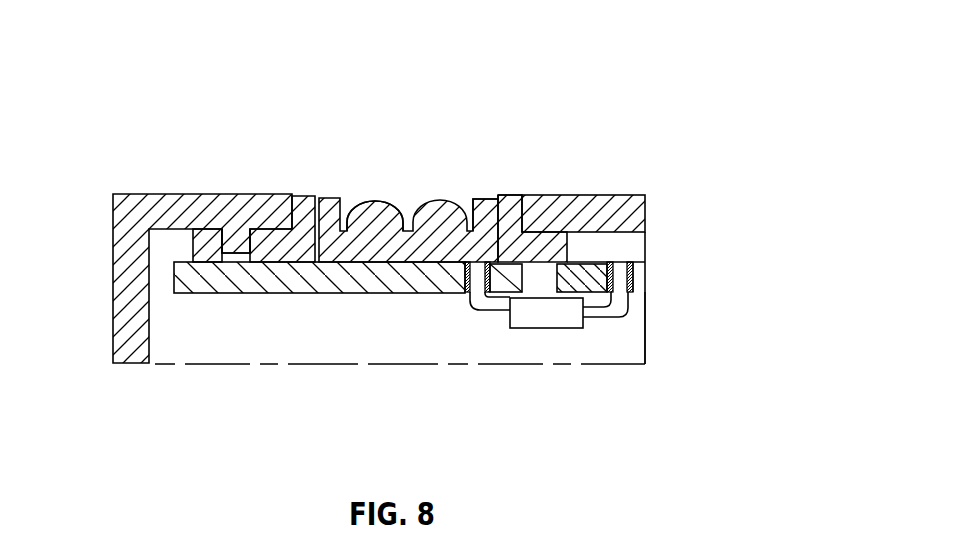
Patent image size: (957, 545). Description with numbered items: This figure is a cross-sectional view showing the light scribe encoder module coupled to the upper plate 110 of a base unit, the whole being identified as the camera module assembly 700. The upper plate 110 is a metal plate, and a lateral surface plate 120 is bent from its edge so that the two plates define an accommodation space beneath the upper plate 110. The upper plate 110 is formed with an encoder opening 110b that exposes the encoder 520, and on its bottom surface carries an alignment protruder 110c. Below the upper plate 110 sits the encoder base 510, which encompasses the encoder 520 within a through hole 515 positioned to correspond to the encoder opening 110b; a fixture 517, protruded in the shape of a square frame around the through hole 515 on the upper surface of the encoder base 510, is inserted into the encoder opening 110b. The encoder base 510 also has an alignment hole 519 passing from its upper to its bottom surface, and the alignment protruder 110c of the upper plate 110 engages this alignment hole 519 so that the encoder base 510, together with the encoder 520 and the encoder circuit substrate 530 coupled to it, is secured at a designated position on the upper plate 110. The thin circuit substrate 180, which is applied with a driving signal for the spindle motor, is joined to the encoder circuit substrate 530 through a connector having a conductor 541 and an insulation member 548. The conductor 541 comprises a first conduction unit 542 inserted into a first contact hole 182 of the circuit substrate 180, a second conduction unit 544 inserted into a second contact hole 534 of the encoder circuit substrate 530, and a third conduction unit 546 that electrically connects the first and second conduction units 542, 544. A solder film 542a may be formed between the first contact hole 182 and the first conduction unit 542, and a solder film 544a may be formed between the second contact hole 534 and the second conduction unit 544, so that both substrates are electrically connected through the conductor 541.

The camera module assembly 700 is at (538, 96).
The lateral surface plate 120 is at (118, 287).
The alignment hole 519 is at (230, 256).
The alignment protruder 110c is at (243, 258).
The encoder circuit substrate 530 is at (345, 303).
The encoder 520 is at (435, 198).
The through hole 515 is at (408, 204).
The fixture 517 is at (499, 198).
The encoder base 510 is at (570, 247).
The encoder opening 110b is at (518, 197).
The upper plate 110 is at (611, 196).
The second contact hole 534 is at (471, 268).
The solder film 544a is at (468, 292).
The second conduction unit 544 is at (487, 298).
The insulation member 548 is at (552, 313).
The third conduction unit 546 is at (592, 318).
The first conduction unit 542 is at (627, 300).
The solder film 542a is at (637, 266).
The first contact hole 182 is at (634, 276).
The circuit substrate 180 is at (637, 286).
The conductor 541 is at (650, 412).